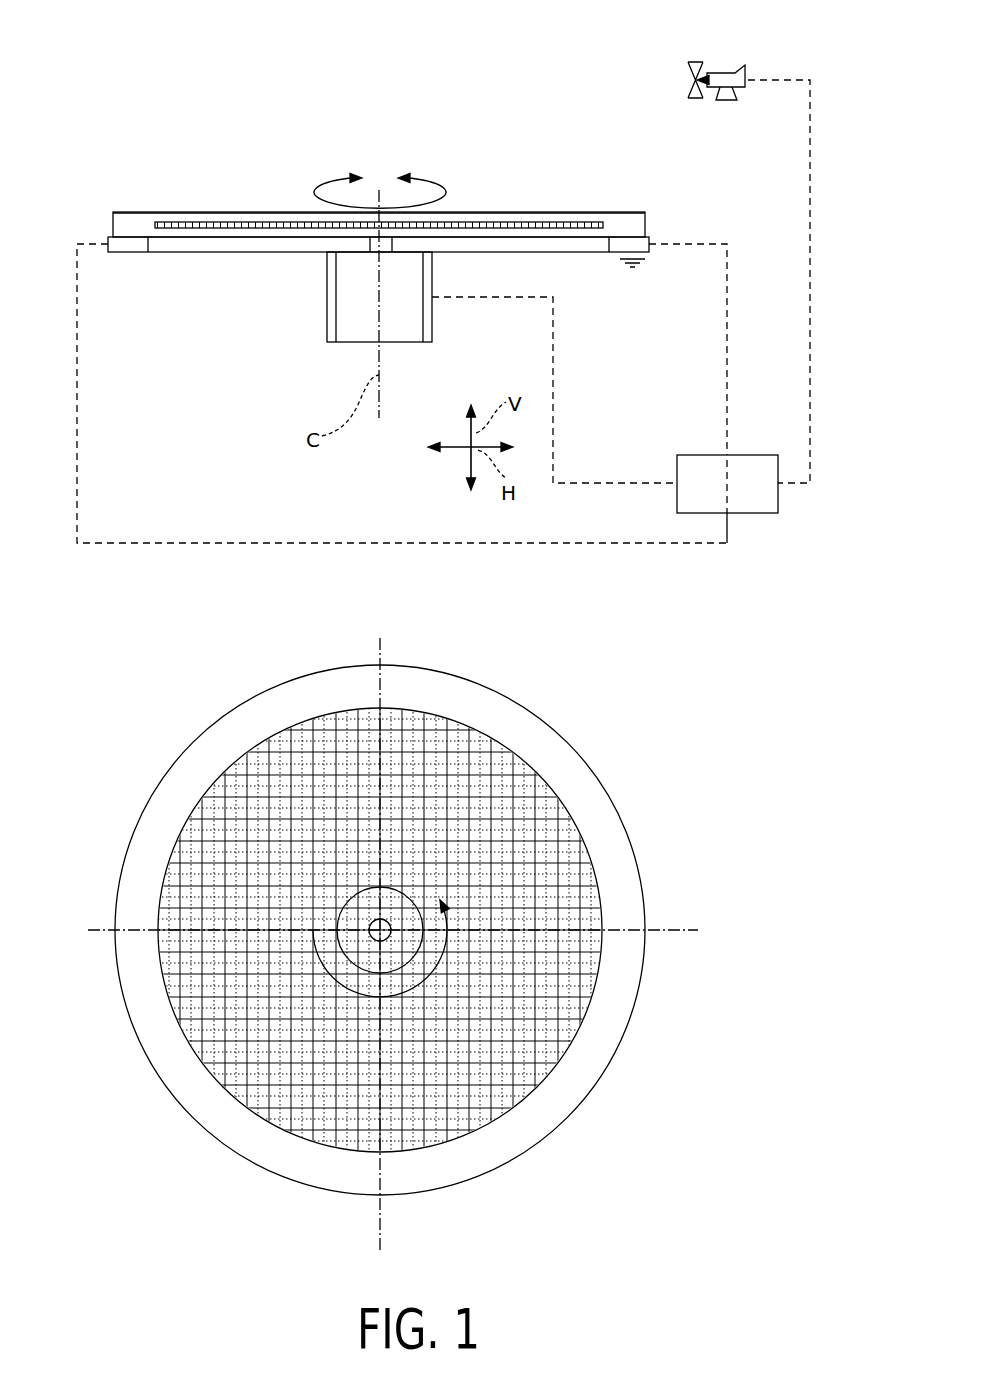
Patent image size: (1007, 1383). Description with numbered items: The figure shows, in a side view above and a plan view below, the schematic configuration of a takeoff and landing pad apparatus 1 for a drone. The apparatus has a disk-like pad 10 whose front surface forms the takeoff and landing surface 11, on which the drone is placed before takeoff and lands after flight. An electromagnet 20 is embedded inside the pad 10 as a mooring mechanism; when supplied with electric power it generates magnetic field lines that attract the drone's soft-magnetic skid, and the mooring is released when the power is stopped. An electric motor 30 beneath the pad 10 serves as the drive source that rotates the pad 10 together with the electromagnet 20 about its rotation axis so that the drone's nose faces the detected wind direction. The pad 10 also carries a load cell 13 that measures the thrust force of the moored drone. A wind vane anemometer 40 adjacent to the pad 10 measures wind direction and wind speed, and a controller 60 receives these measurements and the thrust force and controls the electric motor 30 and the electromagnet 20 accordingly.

The takeoff and landing pad apparatus 1 is at (500, 68).
The pad 10 is at (627, 200).
The takeoff and landing surface 11 is at (568, 213).
The load cell 13 is at (108, 236).
The electromagnet 20 is at (233, 222).
The electric motor 30 is at (333, 287).
The wind vane anemometer 40 is at (717, 73).
The controller 60 is at (748, 455).